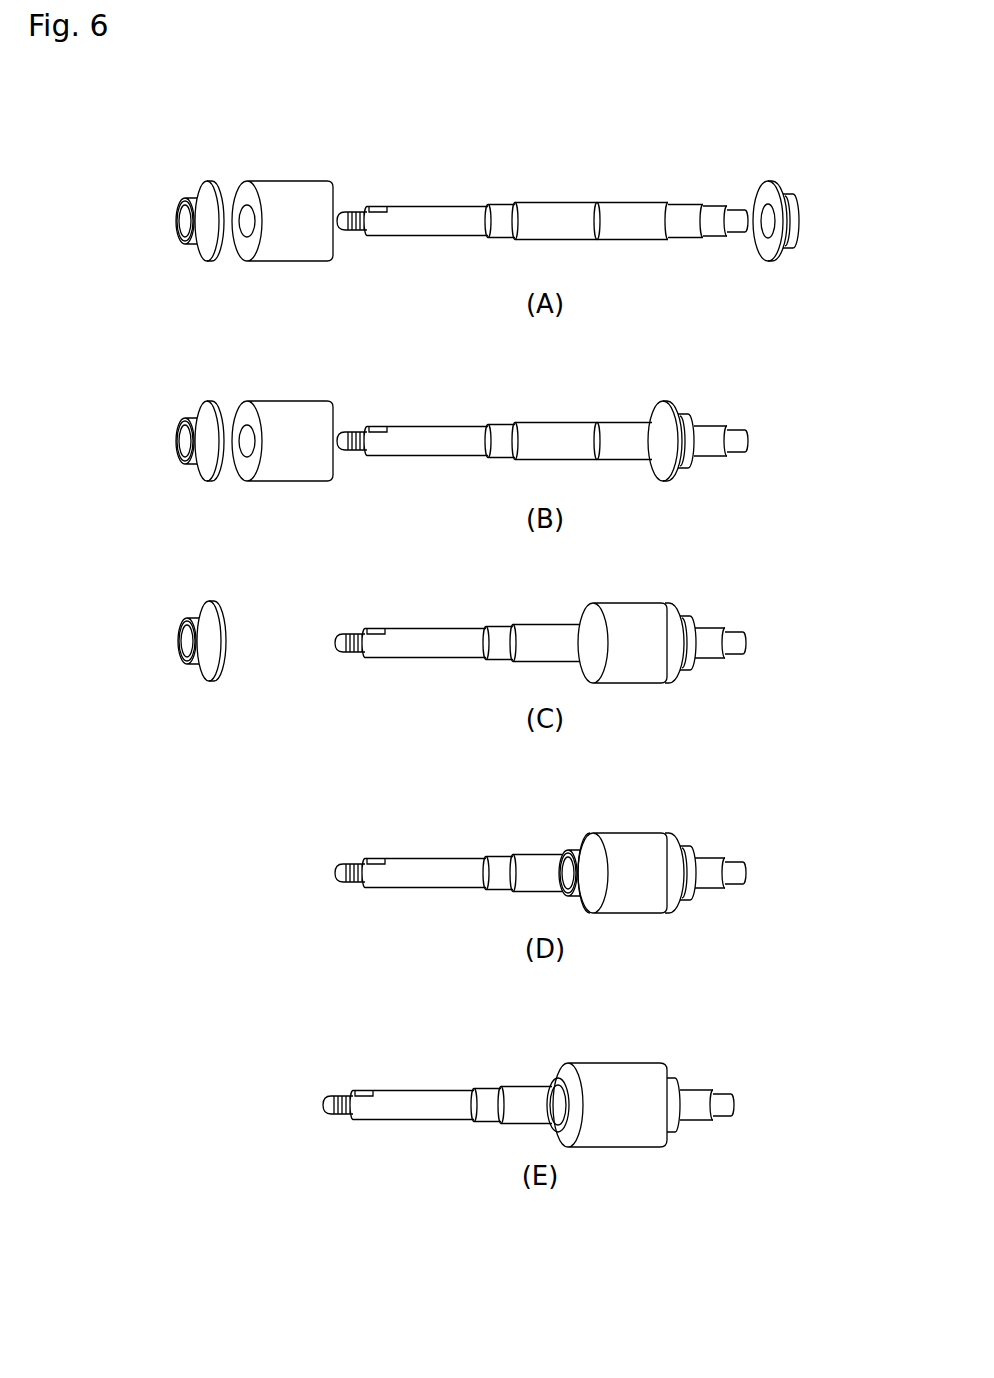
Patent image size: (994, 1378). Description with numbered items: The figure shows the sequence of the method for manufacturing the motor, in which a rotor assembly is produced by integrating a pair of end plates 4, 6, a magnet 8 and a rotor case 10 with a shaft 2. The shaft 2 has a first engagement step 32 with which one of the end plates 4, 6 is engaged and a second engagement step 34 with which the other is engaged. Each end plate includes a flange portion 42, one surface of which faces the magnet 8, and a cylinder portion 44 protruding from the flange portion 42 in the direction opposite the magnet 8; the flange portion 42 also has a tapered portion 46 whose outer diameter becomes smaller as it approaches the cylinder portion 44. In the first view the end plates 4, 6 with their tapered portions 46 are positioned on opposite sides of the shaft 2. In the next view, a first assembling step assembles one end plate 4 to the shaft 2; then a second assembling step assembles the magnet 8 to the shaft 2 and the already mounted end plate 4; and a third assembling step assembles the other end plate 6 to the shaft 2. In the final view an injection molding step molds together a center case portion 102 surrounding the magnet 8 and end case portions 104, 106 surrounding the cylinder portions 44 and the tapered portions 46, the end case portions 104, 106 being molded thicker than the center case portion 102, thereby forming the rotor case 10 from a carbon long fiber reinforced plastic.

The shaft 2 is at (537, 213).
The end plate 4 is at (788, 253).
The end plate 6 is at (195, 253).
The magnet 8 is at (287, 183).
The rotor case 10 is at (660, 1062).
The first engagement step 32 is at (668, 205).
The second engagement step 34 is at (595, 205).
The flange portion 42 is at (215, 182).
The cylinder portion 44 is at (180, 200).
The tapered portion 46 is at (200, 192).
The center case portion 102 is at (638, 1132).
The end case portion 104 is at (678, 1132).
The end case portion 106 is at (560, 1075).